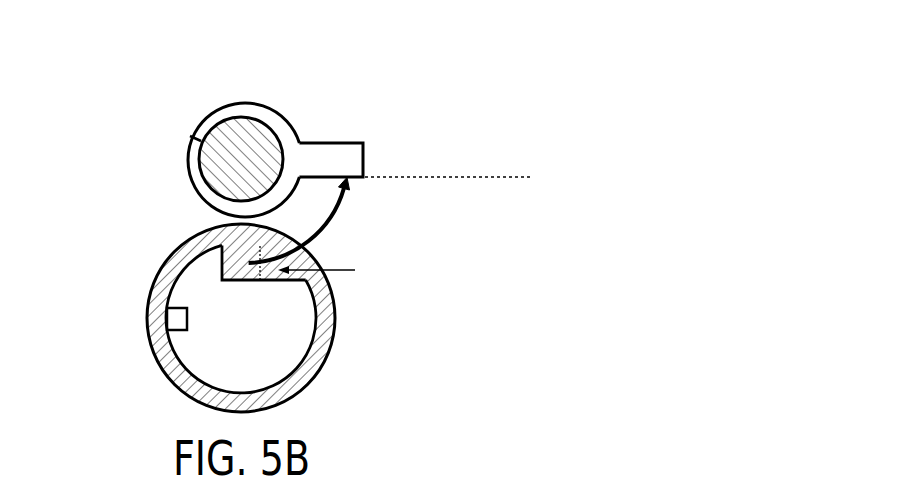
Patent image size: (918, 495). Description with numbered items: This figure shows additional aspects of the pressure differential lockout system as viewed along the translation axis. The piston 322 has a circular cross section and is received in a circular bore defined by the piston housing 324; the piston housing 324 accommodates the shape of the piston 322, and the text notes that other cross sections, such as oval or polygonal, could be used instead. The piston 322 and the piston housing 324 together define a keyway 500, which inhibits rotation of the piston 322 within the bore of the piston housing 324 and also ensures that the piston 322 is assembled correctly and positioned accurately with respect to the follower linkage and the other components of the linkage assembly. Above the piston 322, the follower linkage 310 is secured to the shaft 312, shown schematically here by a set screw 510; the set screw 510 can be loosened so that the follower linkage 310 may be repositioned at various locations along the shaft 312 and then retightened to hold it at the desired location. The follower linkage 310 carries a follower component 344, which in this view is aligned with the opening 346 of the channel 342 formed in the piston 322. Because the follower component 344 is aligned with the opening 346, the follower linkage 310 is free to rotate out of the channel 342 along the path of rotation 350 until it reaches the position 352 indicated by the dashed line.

The follower linkage 310 is at (195, 170).
The shaft 312 is at (233, 142).
The set screw 510 is at (190, 137).
The follower component 344 is at (349, 155).
The position 352 is at (467, 179).
The channel 342 is at (238, 258).
The path of rotation 350 is at (340, 217).
The opening 346 is at (334, 269).
The piston housing 324 is at (167, 283).
The piston 322 is at (190, 347).
The keyway 500 is at (177, 320).